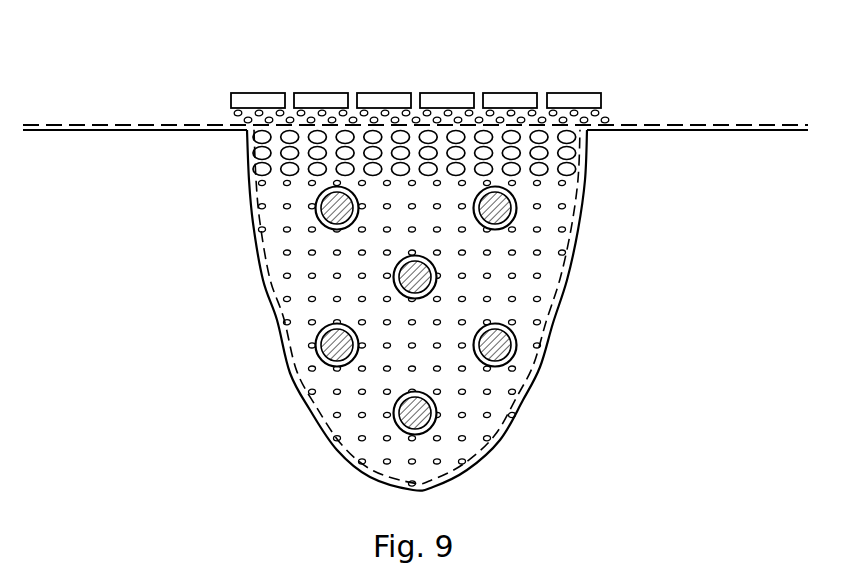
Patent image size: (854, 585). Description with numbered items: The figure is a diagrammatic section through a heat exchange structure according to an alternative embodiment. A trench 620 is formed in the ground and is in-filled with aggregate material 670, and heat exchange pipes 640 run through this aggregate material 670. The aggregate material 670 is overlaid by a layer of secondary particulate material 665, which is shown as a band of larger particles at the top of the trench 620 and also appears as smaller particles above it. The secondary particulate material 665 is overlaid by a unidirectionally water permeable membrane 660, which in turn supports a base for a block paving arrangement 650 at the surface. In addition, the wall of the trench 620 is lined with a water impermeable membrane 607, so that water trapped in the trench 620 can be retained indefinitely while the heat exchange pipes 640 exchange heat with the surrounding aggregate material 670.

The unidirectionally water permeable membrane 660 is at (126, 125).
The secondary particulate material 665 is at (236, 113).
The block paving arrangement 650 is at (252, 93).
The trench 620 is at (250, 218).
The water impermeable membrane 607 is at (262, 282).
The heat exchange pipes 640 is at (312, 353).
The aggregate material 670 is at (330, 415).